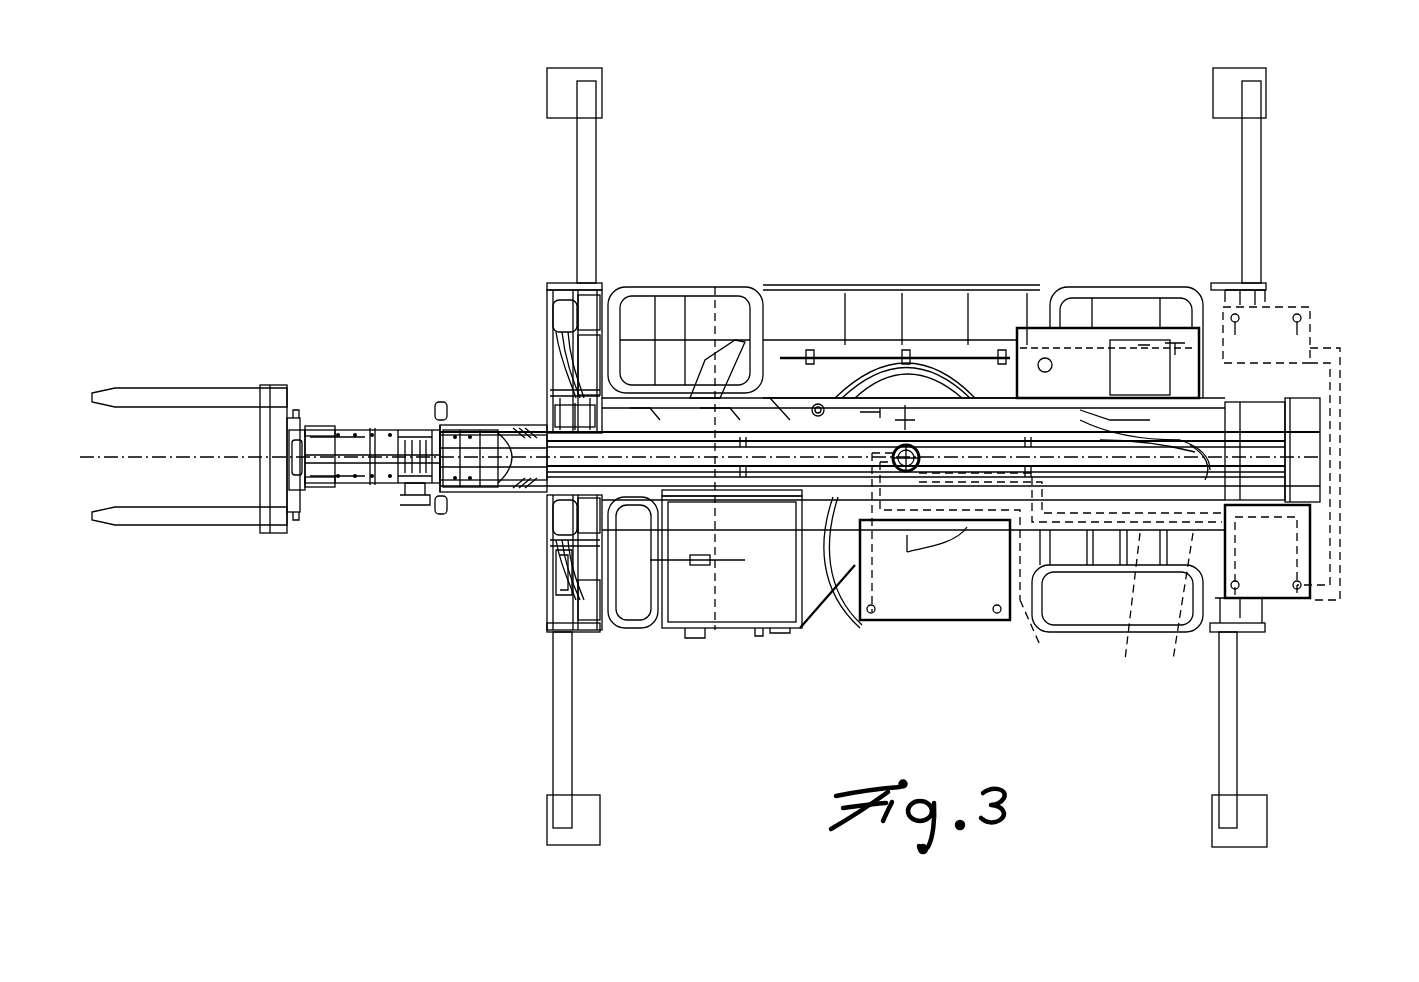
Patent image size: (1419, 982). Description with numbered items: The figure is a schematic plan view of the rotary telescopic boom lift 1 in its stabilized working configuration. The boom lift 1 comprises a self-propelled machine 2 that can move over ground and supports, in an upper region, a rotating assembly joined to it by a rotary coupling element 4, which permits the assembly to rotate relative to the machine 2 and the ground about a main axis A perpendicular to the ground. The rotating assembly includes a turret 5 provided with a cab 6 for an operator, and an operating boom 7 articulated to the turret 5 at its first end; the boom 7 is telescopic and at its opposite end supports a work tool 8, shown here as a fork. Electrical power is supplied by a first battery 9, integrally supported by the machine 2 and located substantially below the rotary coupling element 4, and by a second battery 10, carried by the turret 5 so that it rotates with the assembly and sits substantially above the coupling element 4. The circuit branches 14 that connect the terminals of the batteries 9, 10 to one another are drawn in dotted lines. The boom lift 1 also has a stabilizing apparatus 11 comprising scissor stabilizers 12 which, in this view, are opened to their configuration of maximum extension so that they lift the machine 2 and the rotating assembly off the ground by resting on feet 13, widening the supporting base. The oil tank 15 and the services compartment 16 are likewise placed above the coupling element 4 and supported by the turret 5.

The rotary telescopic boom lift 1 is at (745, 425).
The self-propelled machine 2 is at (763, 272).
The rotary coupling element 4 is at (899, 485).
The turret 5 is at (1130, 382).
The cab 6 is at (754, 645).
The operating boom 7 is at (633, 415).
The work tool 8 is at (172, 378).
The first battery 9 is at (962, 600).
The second battery 10 is at (1273, 305).
The stabilizing apparatus 11 is at (906, 457).
The scissor stabilizers 12 is at (566, 172).
The feet 13 is at (572, 90).
The circuit branches 14 is at (884, 634).
The oil tank 15 is at (1078, 378).
The services compartment 16 is at (1178, 375).
The main axis A is at (835, 420).